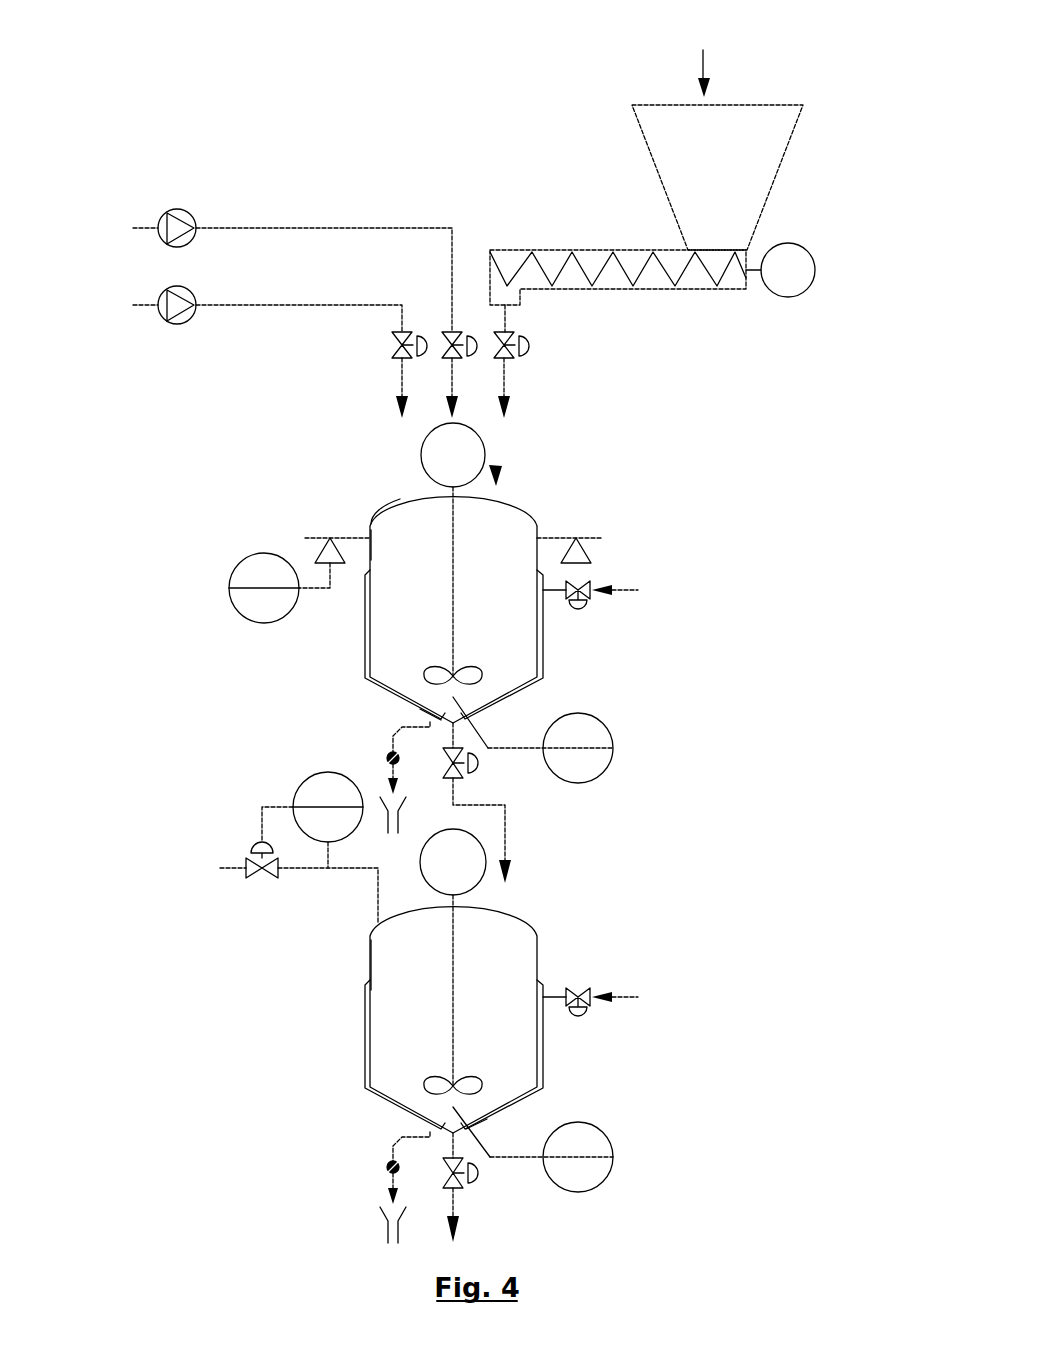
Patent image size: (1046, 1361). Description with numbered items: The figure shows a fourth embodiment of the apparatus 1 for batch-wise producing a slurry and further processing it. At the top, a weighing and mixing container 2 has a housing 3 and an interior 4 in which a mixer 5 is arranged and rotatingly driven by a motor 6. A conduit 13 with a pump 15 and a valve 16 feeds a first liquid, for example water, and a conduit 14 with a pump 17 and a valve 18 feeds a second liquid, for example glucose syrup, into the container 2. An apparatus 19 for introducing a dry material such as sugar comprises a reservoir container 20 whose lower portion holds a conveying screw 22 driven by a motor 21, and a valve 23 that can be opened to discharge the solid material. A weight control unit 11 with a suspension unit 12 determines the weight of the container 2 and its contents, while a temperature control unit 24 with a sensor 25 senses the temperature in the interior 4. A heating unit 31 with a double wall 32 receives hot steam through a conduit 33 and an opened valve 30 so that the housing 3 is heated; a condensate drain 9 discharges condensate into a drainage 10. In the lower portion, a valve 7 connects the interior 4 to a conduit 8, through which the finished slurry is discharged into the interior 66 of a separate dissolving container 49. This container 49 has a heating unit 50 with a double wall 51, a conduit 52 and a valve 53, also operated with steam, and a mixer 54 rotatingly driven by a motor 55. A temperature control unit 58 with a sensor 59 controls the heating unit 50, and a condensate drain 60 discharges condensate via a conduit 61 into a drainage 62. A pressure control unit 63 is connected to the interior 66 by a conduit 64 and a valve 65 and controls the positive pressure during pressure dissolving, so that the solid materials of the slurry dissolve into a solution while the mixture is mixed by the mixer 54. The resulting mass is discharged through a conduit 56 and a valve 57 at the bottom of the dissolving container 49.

The apparatus 1 is at (396, 140).
The weighing and mixing container 2 is at (491, 465).
The housing 3 is at (390, 508).
The interior 4 is at (395, 533).
The mixer 5 is at (455, 632).
The motor 6 is at (433, 440).
The valve 7 is at (458, 777).
The conduit 8 is at (507, 825).
The condensate drain 9 is at (390, 753).
The drainage 10 is at (388, 812).
The weight control unit 11 is at (253, 607).
The suspension unit 12 is at (325, 553).
The conduit 13 is at (223, 306).
The conduit 14 is at (150, 232).
The pump 15 is at (163, 308).
The valve 16 is at (393, 358).
The pump 17 is at (163, 225).
The valve 18 is at (452, 332).
The apparatus for introducing a dry material 19 is at (703, 59).
The reservoir container 20 is at (717, 136).
The motor 21 is at (800, 257).
The conveying screw 22 is at (560, 268).
The valve 23 is at (492, 460).
The temperature control unit 24 is at (592, 765).
The sensor 25 is at (440, 712).
The valve 30 is at (588, 584).
The heating unit 31 is at (368, 618).
The double wall 32 is at (367, 680).
The conduit 33 is at (620, 590).
The dissolving container 49 is at (370, 943).
The heating unit 50 is at (363, 1011).
The double wall 51 is at (365, 1033).
The conduit 52 is at (553, 997).
The valve 53 is at (590, 998).
The mixer 54 is at (453, 952).
The motor 55 is at (467, 880).
The conduit 56 is at (465, 1155).
The valve 57 is at (460, 1188).
The temperature control unit 58 is at (603, 1142).
The sensor 59 is at (478, 1120).
The condensate drain 60 is at (388, 1164).
The conduit 61 is at (393, 1143).
The drainage 62 is at (388, 1223).
The pressure control unit 63 is at (308, 787).
The conduit 64 is at (298, 868).
The valve 65 is at (247, 863).
The interior 66 is at (413, 980).